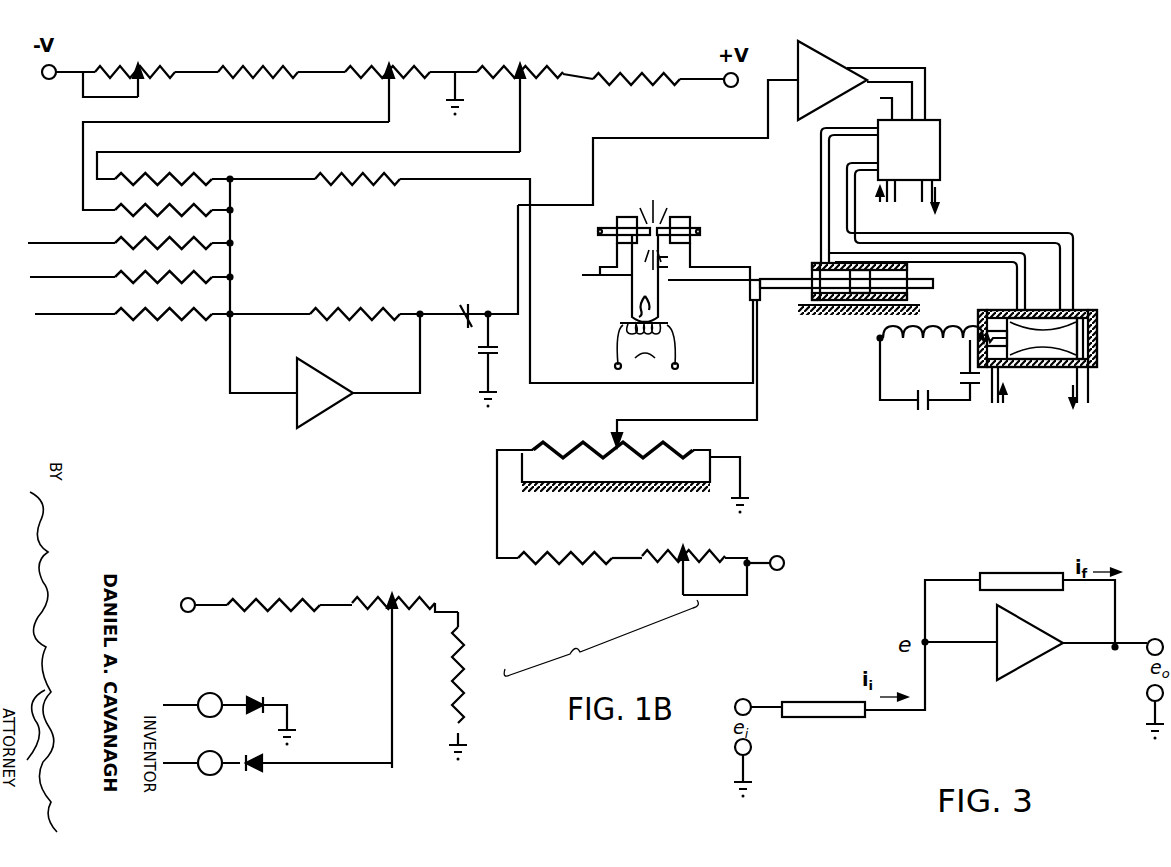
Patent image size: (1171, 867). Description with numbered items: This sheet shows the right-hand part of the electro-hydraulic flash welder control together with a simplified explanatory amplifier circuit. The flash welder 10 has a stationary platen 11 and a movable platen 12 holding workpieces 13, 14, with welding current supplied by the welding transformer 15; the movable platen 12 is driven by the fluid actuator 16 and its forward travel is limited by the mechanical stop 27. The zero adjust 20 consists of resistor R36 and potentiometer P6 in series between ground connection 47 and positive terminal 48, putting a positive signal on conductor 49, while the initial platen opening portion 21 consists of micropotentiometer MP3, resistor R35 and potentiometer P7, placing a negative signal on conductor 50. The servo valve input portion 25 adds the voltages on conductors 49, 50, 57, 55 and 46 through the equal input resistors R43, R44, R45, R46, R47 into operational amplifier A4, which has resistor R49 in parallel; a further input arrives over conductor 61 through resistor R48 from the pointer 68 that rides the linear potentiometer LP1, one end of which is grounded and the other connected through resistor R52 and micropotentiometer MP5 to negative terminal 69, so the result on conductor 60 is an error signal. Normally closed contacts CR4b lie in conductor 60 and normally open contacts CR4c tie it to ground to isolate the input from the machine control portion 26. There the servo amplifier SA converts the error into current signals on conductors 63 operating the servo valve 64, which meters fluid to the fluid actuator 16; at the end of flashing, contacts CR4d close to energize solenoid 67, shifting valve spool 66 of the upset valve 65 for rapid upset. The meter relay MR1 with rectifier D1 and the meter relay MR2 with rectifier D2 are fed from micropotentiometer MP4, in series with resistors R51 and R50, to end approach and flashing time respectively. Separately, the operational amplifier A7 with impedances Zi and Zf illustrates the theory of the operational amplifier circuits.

In FIG. 1B, the flash welder 10 is at (715, 193).
In FIG. 1B, the stationary platen 11 is at (617, 257).
In FIG. 1B, the movable platen 12 is at (688, 253).
In FIG. 1B, the workpiece 13 is at (598, 232).
In FIG. 1B, the workpiece 14 is at (699, 234).
In FIG. 1B, the welding transformer 15 is at (671, 327).
In FIG. 1B, the fluid actuator 16 is at (824, 261).
In FIG. 1B, the zero adjust 20 is at (574, 137).
In FIG. 1B, the initial platen opening portion 21 is at (372, 78).
In FIG. 1B, the servo valve input portion 25 is at (192, 341).
In FIG. 1B, the machine control portion 26 is at (904, 59).
In FIG. 1B, the mechanical stop 27 is at (663, 280).
In FIG. 1B, the conductor 46 is at (84, 315).
In FIG. 1B, the ground connection 47 is at (464, 98).
In FIG. 1B, the positive terminal 48 is at (735, 88).
In FIG. 1B, the conductor / negative terminal 49 is at (46, 80).
In FIG. 1B, the conductor 50 is at (281, 122).
In FIG. 1B, the conductor 55 is at (86, 279).
In FIG. 1B, the conductor 57 is at (73, 245).
In FIG. 1B, the conductor 60 is at (518, 250).
In FIG. 1B, the conductor 61 is at (470, 178).
In FIG. 1B, the conductors 63 is at (878, 99).
In FIG. 1B, the servo valve 64 is at (940, 149).
In FIG. 1B, the upset valve 65 is at (1097, 325).
In FIG. 1B, the valve spool 66 is at (1067, 366).
In FIG. 1B, the solenoid 67 is at (878, 333).
In FIG. 1B, the pointer 68 is at (757, 340).
In FIG. 1B, the negative terminal 69 is at (780, 557).
In FIG. 1B, the micropotentiometer MP3 is at (153, 56).
In FIG. 1B, the resistor R35 is at (296, 66).
In FIG. 1B, the potentiometer P7 is at (377, 60).
In FIG. 1B, the potentiometer P6 is at (557, 78).
In FIG. 1B, the resistor R36 is at (670, 90).
In FIG. 1B, the input resistor R43 is at (199, 176).
In FIG. 1B, the input resistor R44 is at (229, 209).
In FIG. 1B, the input resistor R45 is at (227, 242).
In FIG. 1B, the input resistor R46 is at (227, 275).
In FIG. 1B, the input resistor R47 is at (227, 312).
In FIG. 1B, the resistor R48 is at (339, 176).
In FIG. 1B, the resistor R49 is at (371, 312).
In FIG. 1B, the operational amplifier A4 is at (318, 418).
In FIG. 1B, the normally closed relay contacts CR4b is at (455, 313).
In FIG. 1B, the normally open relay contacts CR4c is at (500, 347).
In FIG. 1B, the relay contacts CR4d is at (958, 378).
In FIG. 1B, the servo amplifier SA is at (839, 66).
In FIG. 1B, the linear potentiometer LP1 is at (688, 452).
In FIG. 1B, the resistor R52 is at (578, 547).
In FIG. 1B, the micropotentiometer MP5 is at (685, 535).
In FIG. 1B, the resistor R51 is at (295, 605).
In FIG. 1B, the micropotentiometer MP4 is at (397, 595).
In FIG. 1B, the resistor R50 is at (466, 679).
In FIG. 1B, the meter type voltage relay MR1 is at (211, 693).
In FIG. 1B, the meter type voltage relay MR2 is at (203, 774).
In FIG. 1B, the rectifier D1 is at (267, 696).
In FIG. 1B, the rectifier D2 is at (263, 776).
In FIG. 3, the input impedance Zi is at (841, 696).
In FIG. 3, the feedback impedance Zf is at (1048, 571).
In FIG. 3, the operational amplifier A7 is at (1034, 654).